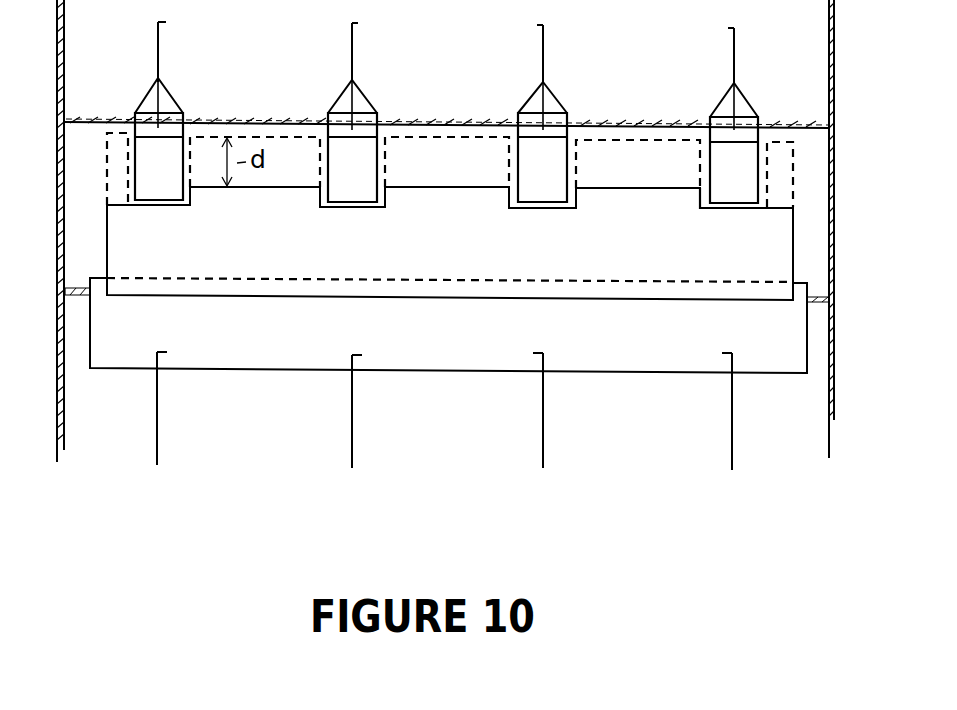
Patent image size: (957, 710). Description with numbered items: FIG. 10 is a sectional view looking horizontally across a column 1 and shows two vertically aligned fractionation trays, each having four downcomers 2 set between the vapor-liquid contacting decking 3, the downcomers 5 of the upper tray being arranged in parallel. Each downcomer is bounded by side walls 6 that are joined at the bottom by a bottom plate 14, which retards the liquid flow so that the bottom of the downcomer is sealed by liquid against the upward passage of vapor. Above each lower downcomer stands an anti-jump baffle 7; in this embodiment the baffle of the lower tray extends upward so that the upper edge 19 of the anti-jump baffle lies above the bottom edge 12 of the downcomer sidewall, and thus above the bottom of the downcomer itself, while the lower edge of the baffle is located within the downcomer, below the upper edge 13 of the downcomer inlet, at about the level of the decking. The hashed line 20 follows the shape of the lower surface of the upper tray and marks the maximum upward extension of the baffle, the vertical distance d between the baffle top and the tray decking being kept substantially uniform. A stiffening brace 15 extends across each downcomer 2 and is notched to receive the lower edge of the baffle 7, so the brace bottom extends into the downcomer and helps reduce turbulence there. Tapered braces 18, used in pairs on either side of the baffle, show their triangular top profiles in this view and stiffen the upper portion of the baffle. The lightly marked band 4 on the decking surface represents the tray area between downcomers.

The column 1 is at (838, 80).
The downcomer 2 is at (142, 188).
The decking 3 is at (440, 112).
The coating 4 is at (262, 109).
The downcomer 5 is at (542, 142).
The downcomer side wall 6 is at (372, 180).
The anti-jump baffle 7 is at (358, 58).
The bottom edge of downcomer sidewall 12 is at (760, 208).
The upper edge of downcomer inlet 13 is at (800, 278).
The bottom plate 14 is at (748, 185).
The bracing bar 15 is at (168, 120).
The tapered brace 18 is at (335, 90).
The upper edge of anti-jump baffle 19 is at (665, 180).
The hashed line 20 is at (97, 190).